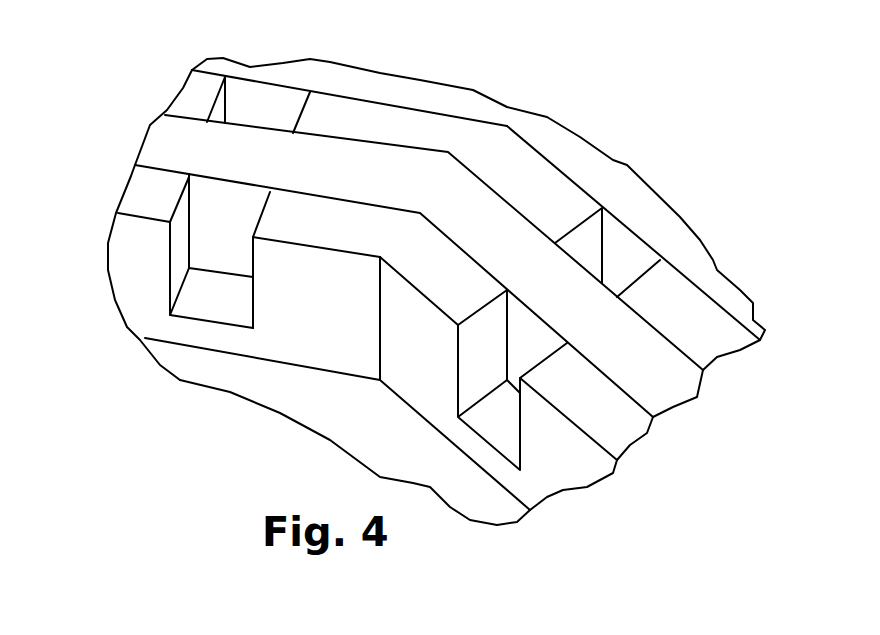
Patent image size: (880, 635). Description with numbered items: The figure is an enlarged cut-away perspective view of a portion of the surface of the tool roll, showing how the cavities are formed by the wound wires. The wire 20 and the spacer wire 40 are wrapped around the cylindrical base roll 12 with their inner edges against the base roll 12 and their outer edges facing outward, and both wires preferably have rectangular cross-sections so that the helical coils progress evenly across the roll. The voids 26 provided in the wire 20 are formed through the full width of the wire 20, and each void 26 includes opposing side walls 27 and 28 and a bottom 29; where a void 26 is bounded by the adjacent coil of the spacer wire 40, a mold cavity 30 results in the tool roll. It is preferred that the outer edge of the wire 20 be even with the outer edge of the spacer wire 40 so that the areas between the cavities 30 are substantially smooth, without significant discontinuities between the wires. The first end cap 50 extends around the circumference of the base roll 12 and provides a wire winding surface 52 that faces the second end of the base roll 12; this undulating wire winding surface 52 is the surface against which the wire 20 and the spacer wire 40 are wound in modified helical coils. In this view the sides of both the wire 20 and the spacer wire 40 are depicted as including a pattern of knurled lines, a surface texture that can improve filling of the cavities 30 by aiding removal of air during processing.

The base roll 12 is at (401, 438).
The wire 20 is at (412, 127).
The void 26 is at (189, 267).
The side wall 27 is at (178, 222).
The side wall 28 is at (263, 212).
The bottom 29 is at (217, 307).
The cavity 30 is at (262, 98).
The spacer wire 40 is at (395, 186).
The first end cap 50 is at (675, 243).
The wire winding surface 52 is at (630, 243).